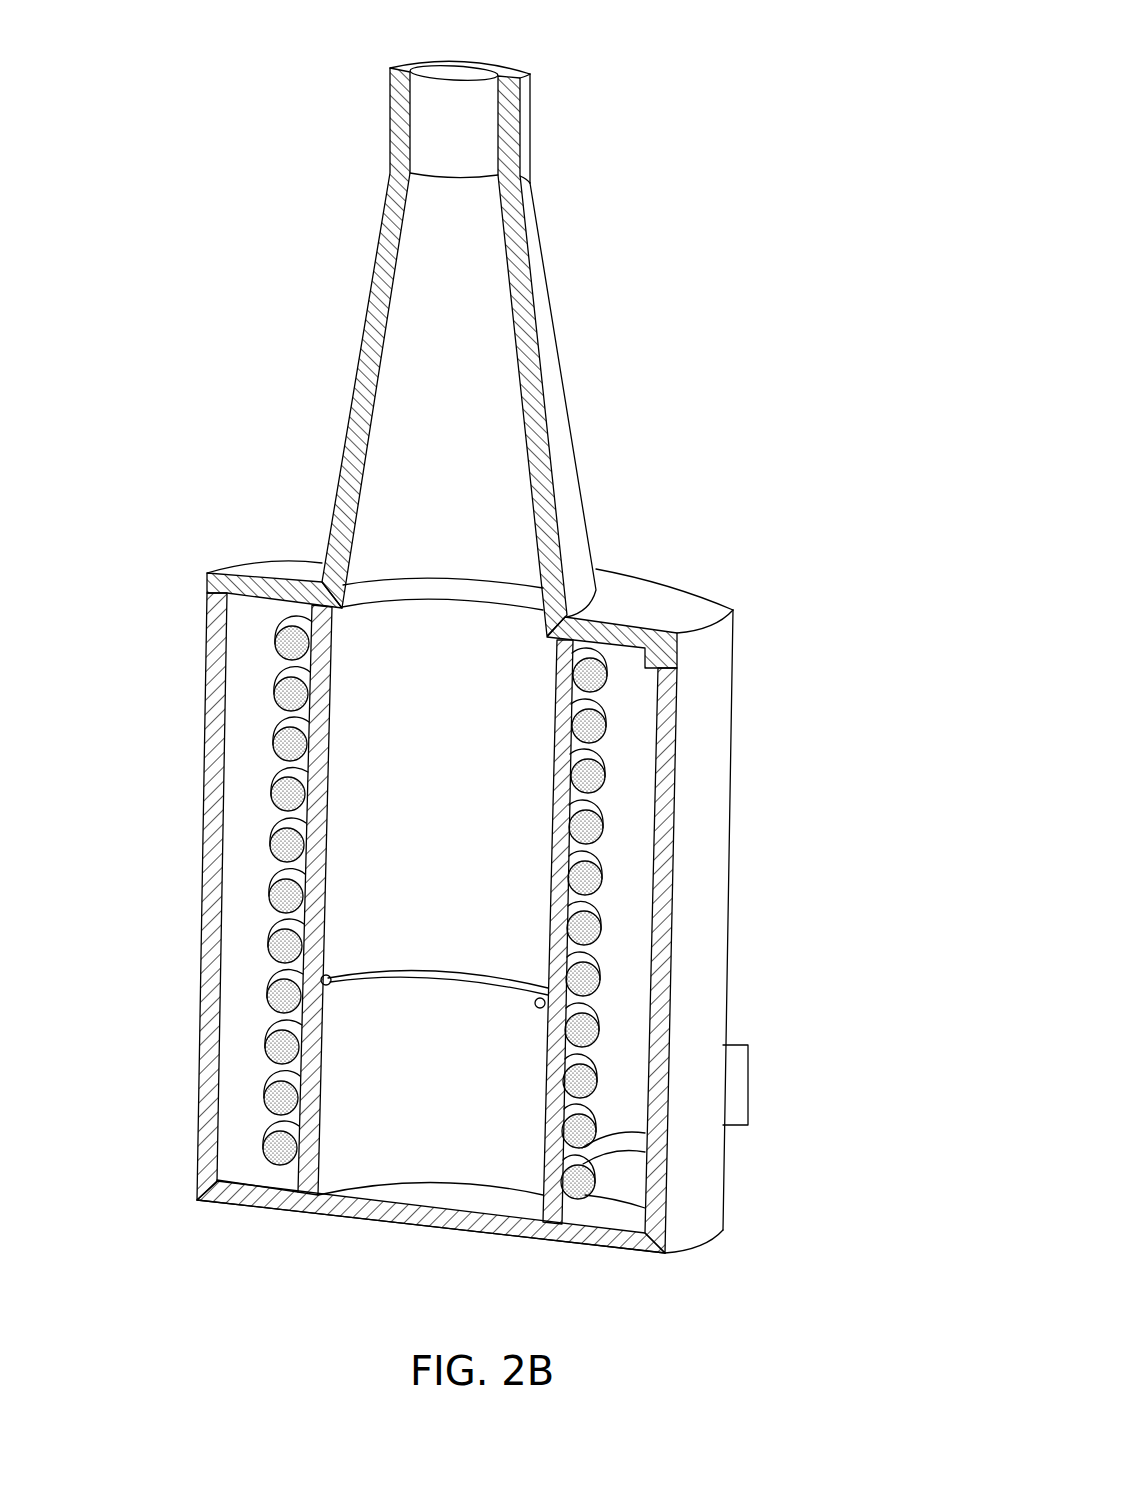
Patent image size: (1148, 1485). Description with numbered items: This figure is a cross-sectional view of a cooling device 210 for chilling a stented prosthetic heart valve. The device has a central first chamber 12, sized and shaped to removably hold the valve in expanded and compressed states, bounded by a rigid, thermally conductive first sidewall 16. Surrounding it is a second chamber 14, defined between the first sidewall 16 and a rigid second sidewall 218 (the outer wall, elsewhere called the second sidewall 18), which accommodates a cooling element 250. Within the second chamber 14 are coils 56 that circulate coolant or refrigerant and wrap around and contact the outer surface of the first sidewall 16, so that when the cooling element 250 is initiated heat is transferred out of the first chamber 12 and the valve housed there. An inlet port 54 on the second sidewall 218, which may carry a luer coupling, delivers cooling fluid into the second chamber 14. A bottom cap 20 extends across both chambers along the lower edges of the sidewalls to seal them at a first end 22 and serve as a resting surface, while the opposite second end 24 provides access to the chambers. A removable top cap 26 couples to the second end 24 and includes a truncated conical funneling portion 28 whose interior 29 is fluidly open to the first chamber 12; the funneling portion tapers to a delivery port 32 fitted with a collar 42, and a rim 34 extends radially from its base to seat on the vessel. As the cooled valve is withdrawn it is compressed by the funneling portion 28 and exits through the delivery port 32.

The cooling device 210 is at (826, 318).
The first chamber 12 is at (492, 792).
The second chamber 14 is at (634, 733).
The first sidewall 16 is at (300, 705).
The second sidewall 18 is at (205, 803).
The bottom cap 20 is at (470, 1225).
The first end 22 is at (328, 1217).
The second end 24 is at (201, 587).
The top cap 26 is at (599, 346).
The funneling portion 28 is at (555, 432).
The interior of the funneling portion 29 is at (383, 455).
The delivery port 32 is at (461, 104).
The rim 34 is at (710, 607).
The collar 42 is at (527, 130).
The inlet port 54 is at (750, 1090).
The coils 56 is at (600, 938).
The second sidewall 218 is at (716, 768).
The cooling element 250 is at (256, 900).